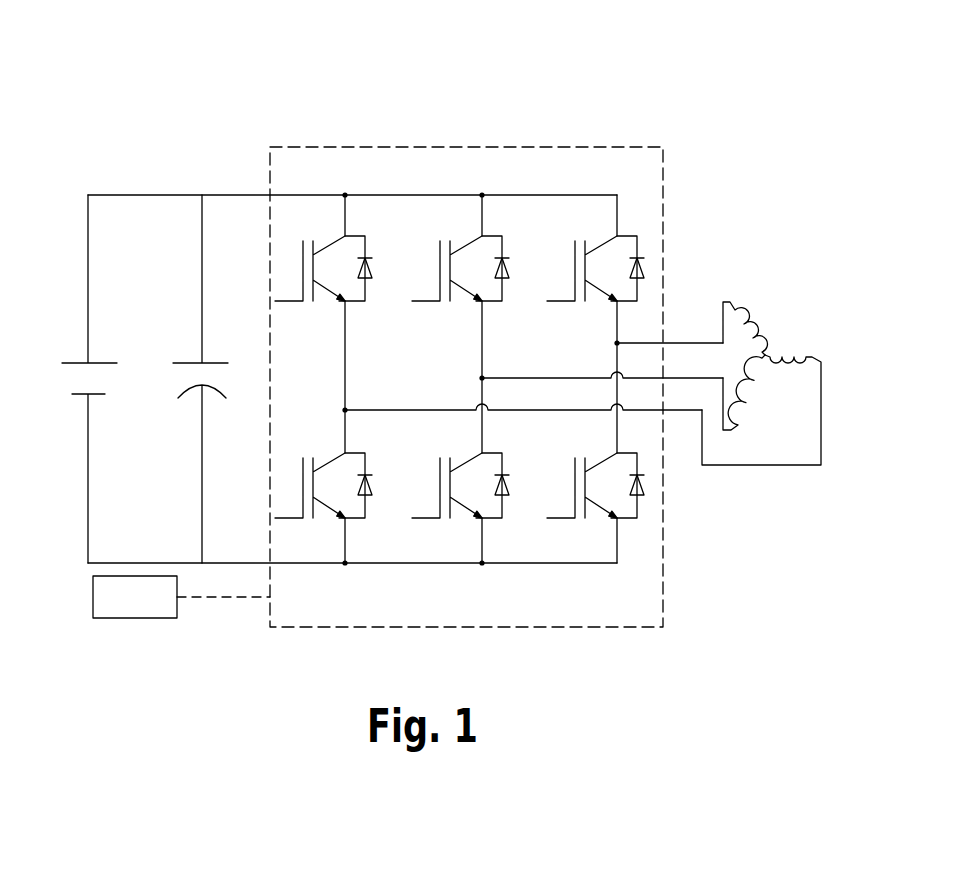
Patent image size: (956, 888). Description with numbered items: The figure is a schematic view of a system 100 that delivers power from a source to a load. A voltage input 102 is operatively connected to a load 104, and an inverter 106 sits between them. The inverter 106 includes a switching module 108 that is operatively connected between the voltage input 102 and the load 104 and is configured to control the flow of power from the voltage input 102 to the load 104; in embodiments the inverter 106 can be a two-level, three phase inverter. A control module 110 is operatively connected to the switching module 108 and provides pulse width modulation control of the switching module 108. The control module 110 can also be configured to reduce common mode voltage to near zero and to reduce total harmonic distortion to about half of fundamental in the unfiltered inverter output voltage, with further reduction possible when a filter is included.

The system 100 is at (99, 110).
The voltage input 102 is at (75, 362).
The load 104 is at (810, 350).
The inverter 106 is at (385, 194).
The switching module 108 is at (340, 146).
The control module 110 is at (149, 610).